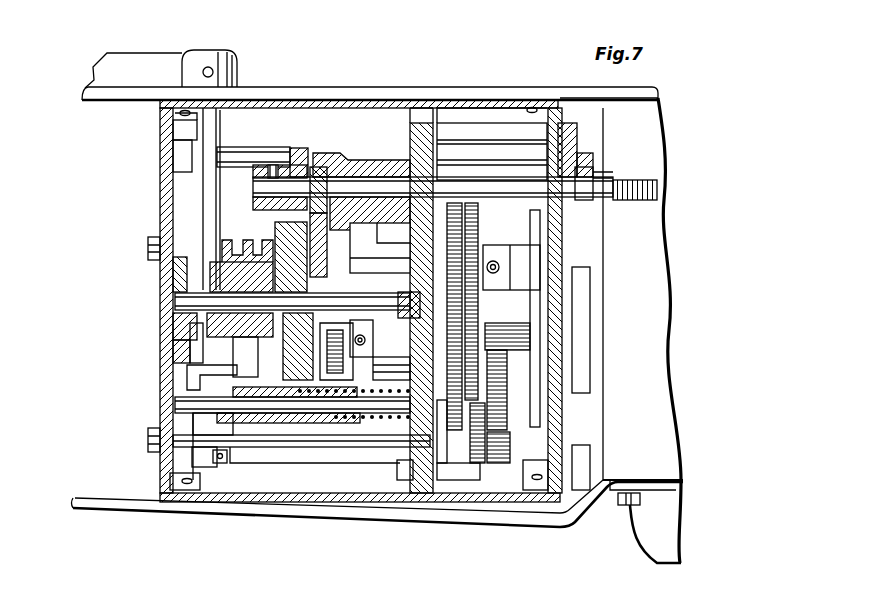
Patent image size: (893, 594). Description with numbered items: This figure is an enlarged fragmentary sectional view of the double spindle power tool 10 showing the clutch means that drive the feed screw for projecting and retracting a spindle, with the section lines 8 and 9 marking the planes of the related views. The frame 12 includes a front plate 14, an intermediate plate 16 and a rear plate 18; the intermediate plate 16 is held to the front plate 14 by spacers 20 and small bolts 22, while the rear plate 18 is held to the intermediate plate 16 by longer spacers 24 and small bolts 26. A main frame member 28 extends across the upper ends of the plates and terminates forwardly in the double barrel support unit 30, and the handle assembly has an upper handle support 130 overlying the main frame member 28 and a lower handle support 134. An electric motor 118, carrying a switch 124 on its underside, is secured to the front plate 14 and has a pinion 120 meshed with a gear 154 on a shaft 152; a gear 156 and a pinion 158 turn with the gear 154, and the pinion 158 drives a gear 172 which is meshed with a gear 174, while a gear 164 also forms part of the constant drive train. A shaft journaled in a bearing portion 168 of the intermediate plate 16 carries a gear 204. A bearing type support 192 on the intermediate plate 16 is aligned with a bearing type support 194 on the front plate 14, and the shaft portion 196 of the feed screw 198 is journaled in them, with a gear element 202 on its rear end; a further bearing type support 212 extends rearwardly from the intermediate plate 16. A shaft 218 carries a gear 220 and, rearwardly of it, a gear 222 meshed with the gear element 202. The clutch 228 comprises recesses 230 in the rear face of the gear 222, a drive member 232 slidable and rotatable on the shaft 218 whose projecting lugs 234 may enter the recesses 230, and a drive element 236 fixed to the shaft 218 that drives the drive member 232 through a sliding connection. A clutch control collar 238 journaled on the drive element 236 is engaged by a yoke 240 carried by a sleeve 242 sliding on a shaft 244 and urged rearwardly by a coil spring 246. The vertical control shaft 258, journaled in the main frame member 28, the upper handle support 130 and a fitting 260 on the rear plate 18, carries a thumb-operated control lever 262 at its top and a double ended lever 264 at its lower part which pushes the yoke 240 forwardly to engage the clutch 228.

The control lever 262 is at (113, 66).
The section line 8 is at (183, 85).
The upper handle support 130 is at (252, 88).
The section line 9 is at (330, 53).
The power tool 10 is at (470, 52).
The main frame member 28 is at (387, 100).
The frame 12 is at (562, 112).
The bearing type support 194 is at (575, 138).
The double barrel support unit 30 is at (648, 125).
The gear element 202 is at (300, 150).
The bearing type support 192 is at (337, 162).
The shaft portion 196 is at (375, 186).
The vertical control shaft 258 is at (207, 180).
The clutch 228 is at (238, 240).
The bearing type support 212 is at (390, 232).
The gear 174 is at (474, 214).
The clutch control collar 238 is at (222, 262).
The gear 222 is at (290, 247).
The small bolts 26 is at (148, 247).
The feed screw 198 is at (645, 203).
The shaft 218 is at (175, 303).
The recesses 230 is at (292, 303).
The gear 172 is at (426, 318).
The gear 164 is at (474, 318).
The pinion 120 is at (515, 333).
The drive element 236 is at (205, 327).
The rear plate 18 is at (168, 352).
The double ended lever 264 is at (203, 377).
The drive member 232 is at (267, 342).
The gear 204 is at (373, 372).
The shaft 152 is at (525, 392).
The gear 220 is at (331, 362).
The bearing portion 168 is at (380, 360).
The electric motor 118 is at (661, 344).
The yoke 240 is at (292, 402).
The projecting lugs 234 is at (276, 313).
The pinion 158 is at (452, 413).
The shaft 244 is at (377, 401).
The front plate 14 is at (558, 412).
The coil spring 246 is at (301, 442).
The intermediate plate 16 is at (432, 443).
The sleeve 242 is at (301, 420).
The gear 154 is at (495, 452).
The fitting 260 is at (226, 463).
The spacers 24 is at (283, 454).
The gear 156 is at (475, 438).
The small bolts 22 is at (408, 481).
The spacers 20 is at (504, 470).
The lower handle support 134 is at (233, 514).
The switch 124 is at (657, 553).